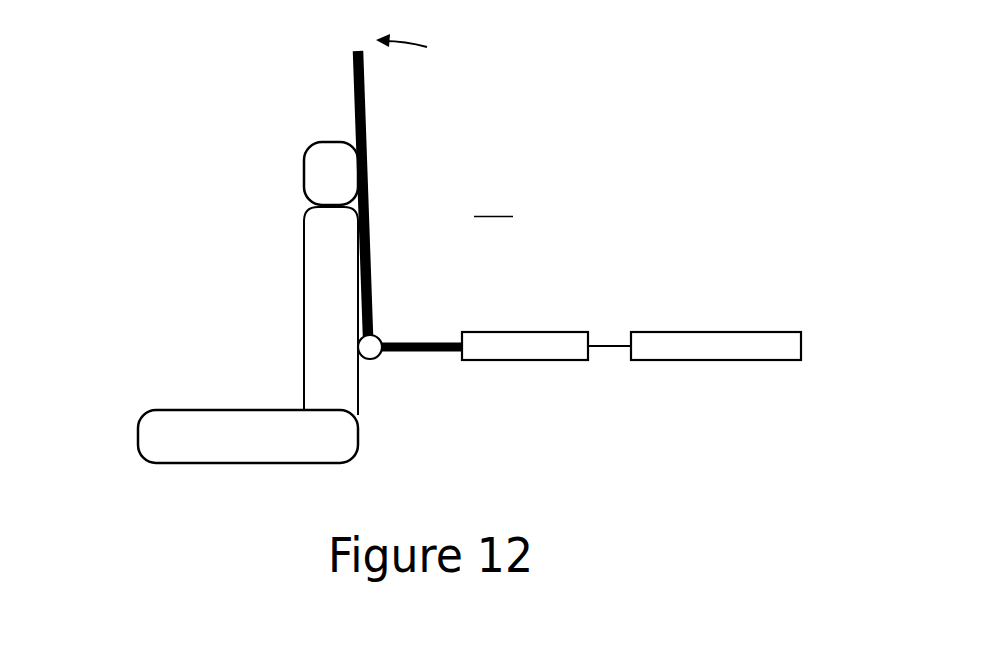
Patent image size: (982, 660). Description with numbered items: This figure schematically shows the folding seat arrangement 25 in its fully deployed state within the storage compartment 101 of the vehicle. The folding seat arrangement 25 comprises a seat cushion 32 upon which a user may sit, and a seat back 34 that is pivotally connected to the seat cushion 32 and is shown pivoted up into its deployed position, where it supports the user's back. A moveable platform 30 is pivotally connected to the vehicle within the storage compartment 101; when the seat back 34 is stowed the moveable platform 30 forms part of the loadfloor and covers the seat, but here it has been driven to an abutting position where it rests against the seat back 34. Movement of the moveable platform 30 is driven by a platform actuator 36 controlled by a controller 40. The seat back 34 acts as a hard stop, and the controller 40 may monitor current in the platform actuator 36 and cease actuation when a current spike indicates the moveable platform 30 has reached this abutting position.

The folding seat arrangement 25 is at (180, 302).
The moveable platform 30 is at (365, 167).
The seat cushion 32 is at (180, 410).
The seat back 34 is at (304, 272).
The platform actuator 36 is at (523, 332).
The controller 40 is at (717, 332).
The storage compartment 101 is at (493, 206).